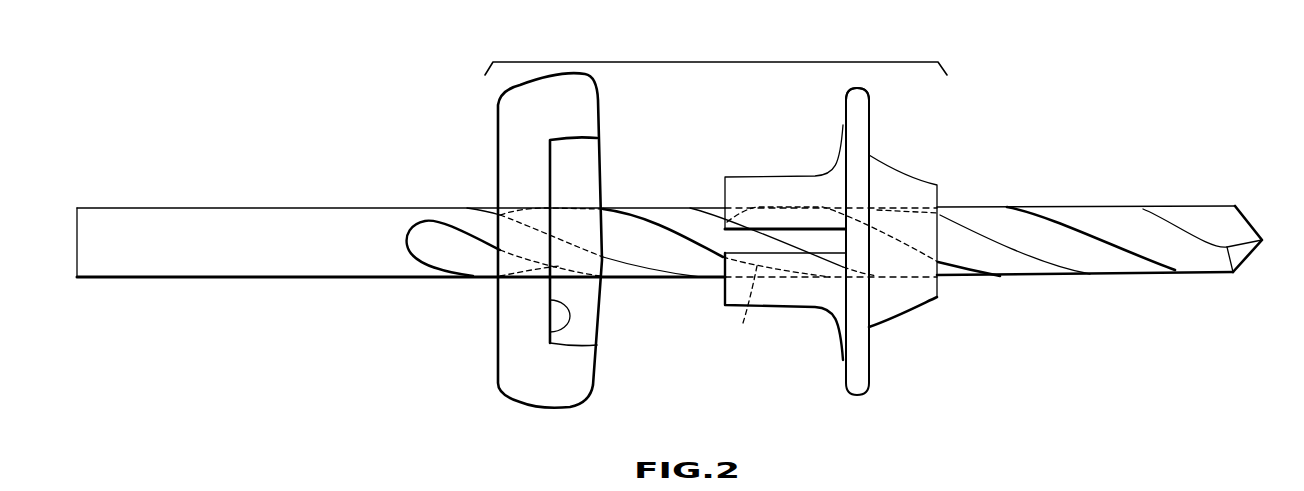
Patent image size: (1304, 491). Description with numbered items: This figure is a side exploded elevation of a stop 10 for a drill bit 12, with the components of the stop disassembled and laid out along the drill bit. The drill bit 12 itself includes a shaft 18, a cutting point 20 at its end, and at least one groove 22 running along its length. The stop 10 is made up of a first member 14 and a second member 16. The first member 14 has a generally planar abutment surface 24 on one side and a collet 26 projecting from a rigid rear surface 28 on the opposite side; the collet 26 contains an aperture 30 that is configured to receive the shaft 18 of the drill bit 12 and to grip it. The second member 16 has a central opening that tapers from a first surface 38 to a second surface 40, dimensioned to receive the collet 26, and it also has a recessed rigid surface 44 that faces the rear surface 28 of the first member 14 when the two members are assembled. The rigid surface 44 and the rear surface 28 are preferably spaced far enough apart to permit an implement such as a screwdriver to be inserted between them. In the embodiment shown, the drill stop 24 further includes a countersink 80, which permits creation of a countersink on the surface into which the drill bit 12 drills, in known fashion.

The stop 10 is at (720, 62).
The drill bit 12 is at (337, 279).
The first member 14 is at (857, 363).
The second member 16 is at (543, 410).
The shaft 18 is at (315, 206).
The cutting point 20 is at (1265, 241).
The groove 22 is at (1130, 260).
The abutment surface 24 is at (870, 126).
The collet 26 is at (783, 165).
The rear surface 28 is at (842, 363).
The aperture 30 is at (742, 308).
The first surface 38 is at (600, 313).
The second surface 40 is at (498, 313).
The rigid surface 44 is at (547, 332).
The countersink 80 is at (937, 190).